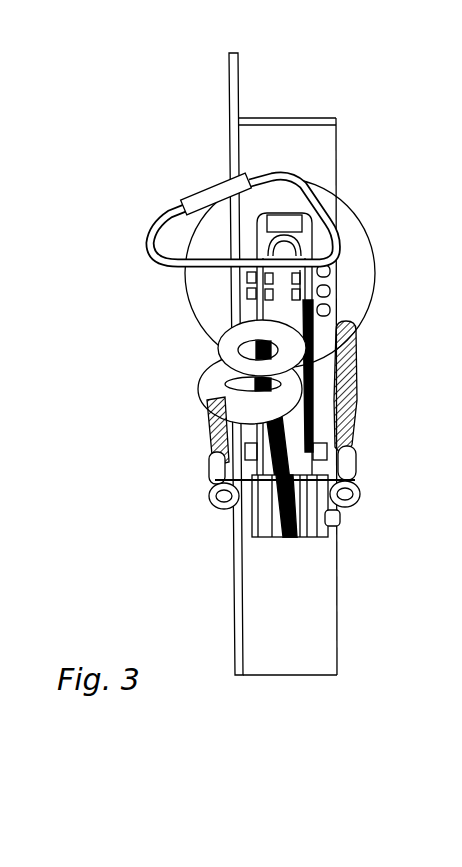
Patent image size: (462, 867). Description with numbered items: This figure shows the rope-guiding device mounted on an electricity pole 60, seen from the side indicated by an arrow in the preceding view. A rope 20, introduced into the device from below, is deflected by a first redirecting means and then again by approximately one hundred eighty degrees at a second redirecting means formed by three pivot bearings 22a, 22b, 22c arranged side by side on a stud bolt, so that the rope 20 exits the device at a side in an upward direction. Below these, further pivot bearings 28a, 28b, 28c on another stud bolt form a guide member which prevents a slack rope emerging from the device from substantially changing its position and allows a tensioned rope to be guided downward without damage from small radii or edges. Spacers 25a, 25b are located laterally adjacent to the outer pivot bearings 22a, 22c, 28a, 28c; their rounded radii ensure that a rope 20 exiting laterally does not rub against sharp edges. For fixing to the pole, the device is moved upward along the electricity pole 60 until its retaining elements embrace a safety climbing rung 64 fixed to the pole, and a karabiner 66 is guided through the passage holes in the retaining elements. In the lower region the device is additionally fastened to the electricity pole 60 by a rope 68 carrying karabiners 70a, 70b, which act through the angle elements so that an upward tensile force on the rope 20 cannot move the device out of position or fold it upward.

The electricity pole 60 is at (287, 147).
The karabiner 66 is at (175, 210).
The rope 20 is at (307, 377).
The safety climbing rung 64 is at (212, 378).
The rope 68 is at (212, 428).
The pivot bearing 22a is at (237, 475).
The pivot bearing 22b is at (305, 425).
The pivot bearing 22c is at (340, 478).
The karabiner 70a is at (212, 512).
The karabiner 70b is at (357, 503).
The spacer 25a is at (245, 527).
The spacer 25b is at (335, 523).
The pivot bearing 28a is at (277, 538).
The pivot bearing 28b is at (288, 538).
The pivot bearing 28c is at (297, 537).